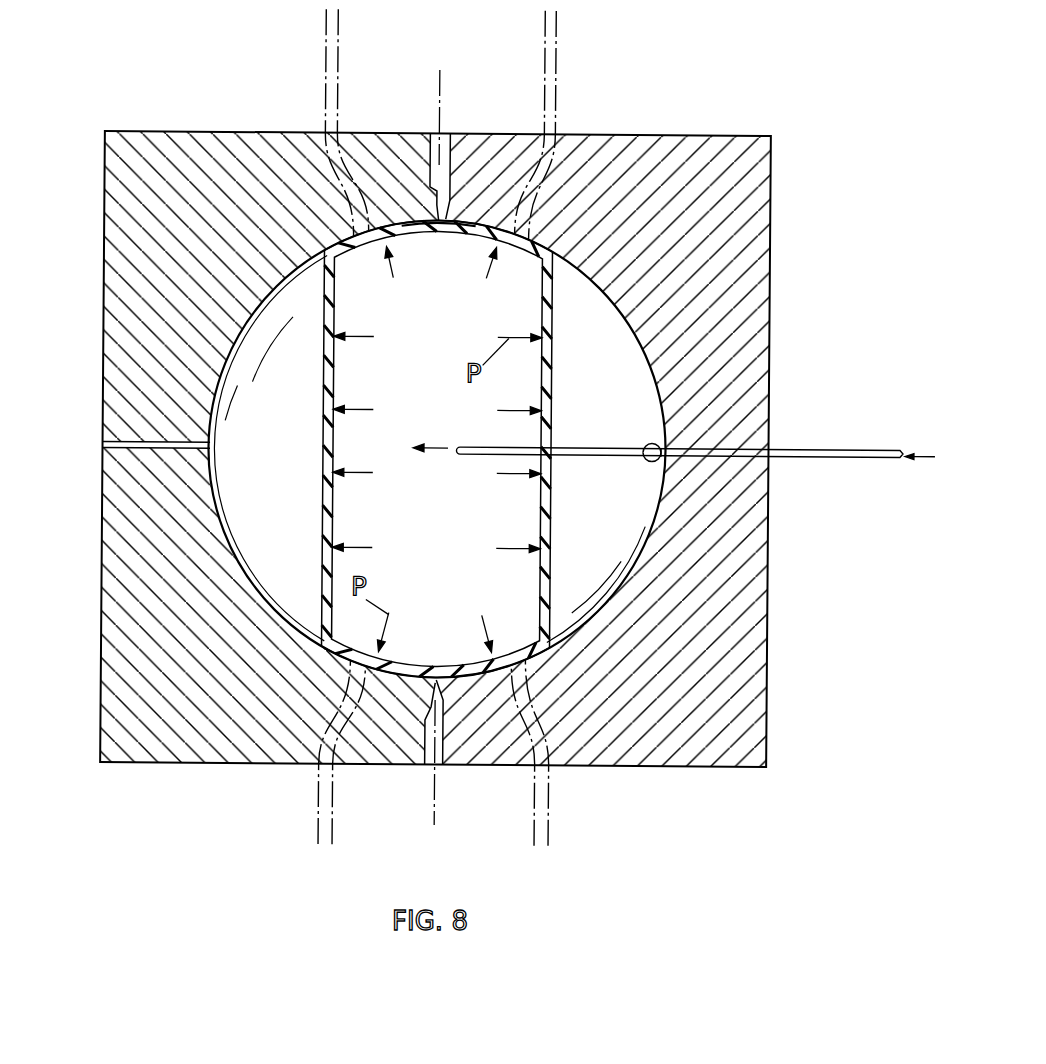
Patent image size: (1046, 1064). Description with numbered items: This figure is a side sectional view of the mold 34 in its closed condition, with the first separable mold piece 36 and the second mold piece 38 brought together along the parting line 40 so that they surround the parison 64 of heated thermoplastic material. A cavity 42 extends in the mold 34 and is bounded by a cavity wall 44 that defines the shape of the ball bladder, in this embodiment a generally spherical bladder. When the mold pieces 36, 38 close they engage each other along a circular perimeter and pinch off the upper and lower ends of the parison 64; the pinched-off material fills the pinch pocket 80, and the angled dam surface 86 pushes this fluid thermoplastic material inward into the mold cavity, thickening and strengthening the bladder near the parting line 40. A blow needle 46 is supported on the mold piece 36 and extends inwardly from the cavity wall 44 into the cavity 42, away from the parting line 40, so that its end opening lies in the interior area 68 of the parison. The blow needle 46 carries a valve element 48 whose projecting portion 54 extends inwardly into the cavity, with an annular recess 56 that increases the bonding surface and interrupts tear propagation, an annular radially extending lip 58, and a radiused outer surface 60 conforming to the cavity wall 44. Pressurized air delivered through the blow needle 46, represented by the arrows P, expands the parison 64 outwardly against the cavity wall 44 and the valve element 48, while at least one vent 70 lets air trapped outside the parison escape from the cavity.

The mold 34 is at (628, 107).
The first separable mold piece 36 is at (667, 743).
The second mold piece 38 is at (210, 742).
The parting line 40 is at (433, 807).
The cavity 42 is at (257, 543).
The cavity wall 44 is at (218, 510).
The blow needle 46 is at (803, 452).
The valve element 48 is at (658, 435).
The projecting portion 54 is at (645, 443).
The annular recess 56 is at (662, 460).
The annular radially extending lip 58 is at (668, 458).
The outer surface 60 is at (670, 462).
The parison 64 is at (548, 537).
The interior area 68 is at (423, 560).
The vent 70 is at (128, 449).
The pinch pocket 80 is at (443, 128).
The angled dam surface 86 is at (434, 220).